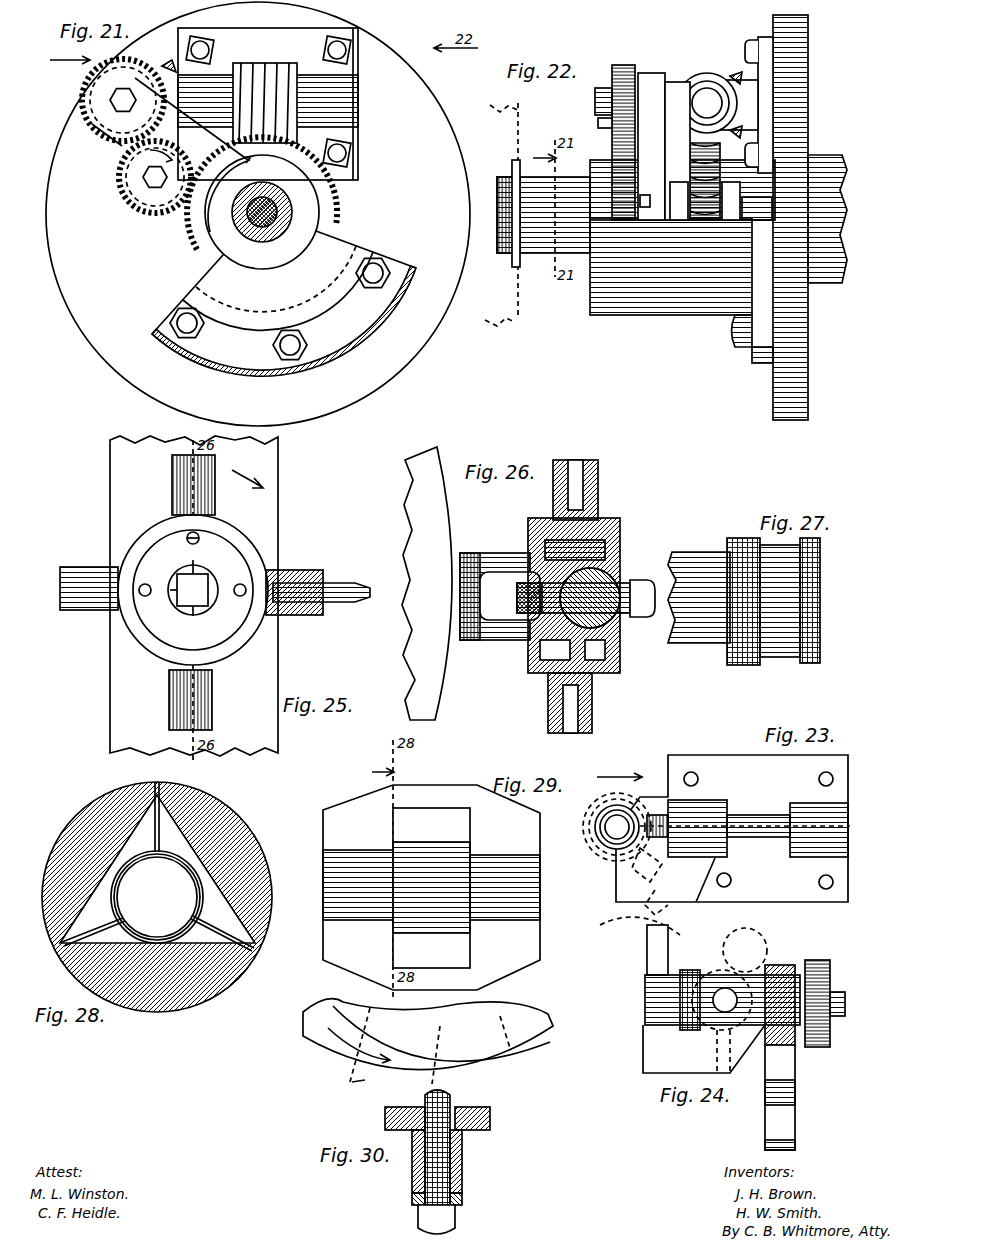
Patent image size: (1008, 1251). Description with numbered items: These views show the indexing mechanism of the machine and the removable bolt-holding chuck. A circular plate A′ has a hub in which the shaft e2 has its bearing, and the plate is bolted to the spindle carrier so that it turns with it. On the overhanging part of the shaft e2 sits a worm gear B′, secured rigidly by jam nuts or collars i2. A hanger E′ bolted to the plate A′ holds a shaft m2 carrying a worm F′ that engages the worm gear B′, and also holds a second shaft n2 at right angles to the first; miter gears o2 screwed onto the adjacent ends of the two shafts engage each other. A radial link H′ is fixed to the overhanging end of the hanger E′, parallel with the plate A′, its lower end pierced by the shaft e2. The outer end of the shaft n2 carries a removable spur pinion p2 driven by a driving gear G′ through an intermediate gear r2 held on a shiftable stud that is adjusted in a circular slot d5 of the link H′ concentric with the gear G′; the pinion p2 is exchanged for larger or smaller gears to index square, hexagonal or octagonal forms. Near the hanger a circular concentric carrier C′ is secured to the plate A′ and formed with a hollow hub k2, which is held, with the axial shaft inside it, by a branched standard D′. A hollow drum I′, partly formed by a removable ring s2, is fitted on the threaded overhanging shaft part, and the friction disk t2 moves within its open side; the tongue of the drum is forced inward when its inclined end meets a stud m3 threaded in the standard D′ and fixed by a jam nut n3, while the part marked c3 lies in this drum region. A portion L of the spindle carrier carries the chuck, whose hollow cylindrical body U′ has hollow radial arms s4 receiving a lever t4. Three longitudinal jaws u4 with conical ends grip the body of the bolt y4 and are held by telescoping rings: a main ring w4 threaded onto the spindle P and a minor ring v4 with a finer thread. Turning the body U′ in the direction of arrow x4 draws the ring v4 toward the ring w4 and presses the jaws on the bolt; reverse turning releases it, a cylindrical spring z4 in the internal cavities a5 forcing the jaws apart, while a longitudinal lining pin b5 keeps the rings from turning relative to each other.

In FIG. 21, the circular plate A′ is at (258, 214).
In FIG. 22, the circular plate A′ is at (810, 217).
In FIG. 21, the worm gear B′ is at (284, 244).
In FIG. 22, the worm gear B′ is at (674, 182).
In FIG. 21, the circular concentric standard or carrier C′ is at (284, 314).
In FIG. 22, the circular concentric standard or carrier C′ is at (668, 303).
In FIG. 30, the branched standard D′ is at (459, 1170).
In FIG. 21, the hanger E′ is at (268, 104).
In FIG. 22, the hanger E′ is at (740, 105).
In FIG. 23, the hanger E′ is at (732, 828).
In FIG. 24, the hanger E′ is at (704, 999).
In FIG. 21, the worm F′ is at (268, 92).
In FIG. 22, the worm F′ is at (698, 75).
In FIG. 21, the driving gear G′ is at (332, 204).
In FIG. 22, the driving gear G′ is at (640, 194).
In FIG. 21, the radial link H′ is at (170, 119).
In FIG. 22, the radial link H′ is at (651, 80).
In FIG. 23, the radial link H′ is at (675, 882).
In FIG. 24, the radial link H′ is at (790, 1070).
In FIG. 22, the hollow drum I′ is at (503, 216).
In FIG. 30, the hollow drum I′ is at (428, 1034).
In FIG. 25, the panel plate L is at (194, 596).
In FIG. 26, the panel plate L is at (427, 583).
In FIG. 26, the spindle P is at (480, 560).
In FIG. 27, the spindle P is at (696, 566).
In FIG. 25, the hollow cylindrical body U′ is at (240, 541).
In FIG. 26, the hollow cylindrical body U′ is at (612, 673).
In FIG. 21, the miter gears o2 is at (165, 66).
In FIG. 22, the miter gears o2 is at (738, 76).
In FIG. 21, the removable spur pinion p2 is at (85, 92).
In FIG. 22, the removable spur pinion p2 is at (623, 65).
In FIG. 24, the removable spur pinion p2 is at (820, 960).
In FIG. 21, the intermediate gear r2 is at (120, 176).
In FIG. 22, the intermediate gear r2 is at (612, 126).
In FIG. 21, the arrow / stop c3 is at (161, 154).
In FIG. 30, the arrow / stop c3 is at (355, 1080).
In FIG. 21, the hub k2 is at (272, 243).
In FIG. 22, the hub k2 is at (572, 191).
In FIG. 22, the shaft m2 is at (707, 103).
In FIG. 23, the shaft m2 is at (765, 822).
In FIG. 22, the jam nuts or collars i2 is at (681, 194).
In FIG. 22, the shaft e2 is at (758, 206).
In FIG. 25, the hollow radial arms s4 is at (180, 466).
In FIG. 26, the hollow radial arms s4 is at (592, 474).
In FIG. 25, the arrow x4 is at (247, 472).
In FIG. 25, the longitudinal lining pin b5 is at (188, 536).
In FIG. 26, the longitudinal lining pin b5 is at (614, 548).
In FIG. 25, the lever t4 is at (348, 587).
In FIG. 25, the longitudinal jaws u4 is at (163, 598).
In FIG. 26, the longitudinal jaws u4 is at (614, 584).
In FIG. 28, the longitudinal jaws u4 is at (78, 818).
In FIG. 29, the longitudinal jaws u4 is at (431, 887).
In FIG. 25, the bolt y4 is at (192, 590).
In FIG. 26, the bolt y4 is at (520, 592).
In FIG. 25, the minor ring v4 is at (178, 640).
In FIG. 26, the minor ring v4 is at (616, 646).
In FIG. 27, the minor ring v4 is at (820, 552).
In FIG. 26, the cylindrical spring z4 is at (602, 573).
In FIG. 28, the cylindrical spring z4 is at (197, 900).
In FIG. 29, the cylindrical spring z4 is at (431, 885).
In FIG. 26, the main ring w4 is at (532, 645).
In FIG. 27, the main ring w4 is at (740, 665).
In FIG. 28, the internal cavities a5 is at (158, 866).
In FIG. 29, the internal cavities a5 is at (431, 888).
In FIG. 30, the friction disk t2 is at (430, 1046).
In FIG. 30, the removable ring s2 is at (439, 1034).
In FIG. 30, the stud m3 is at (450, 1103).
In FIG. 30, the jam nut n3 is at (453, 1211).
In FIG. 23, the circular slot d5 is at (646, 902).
In FIG. 24, the shaft n2 is at (690, 1018).